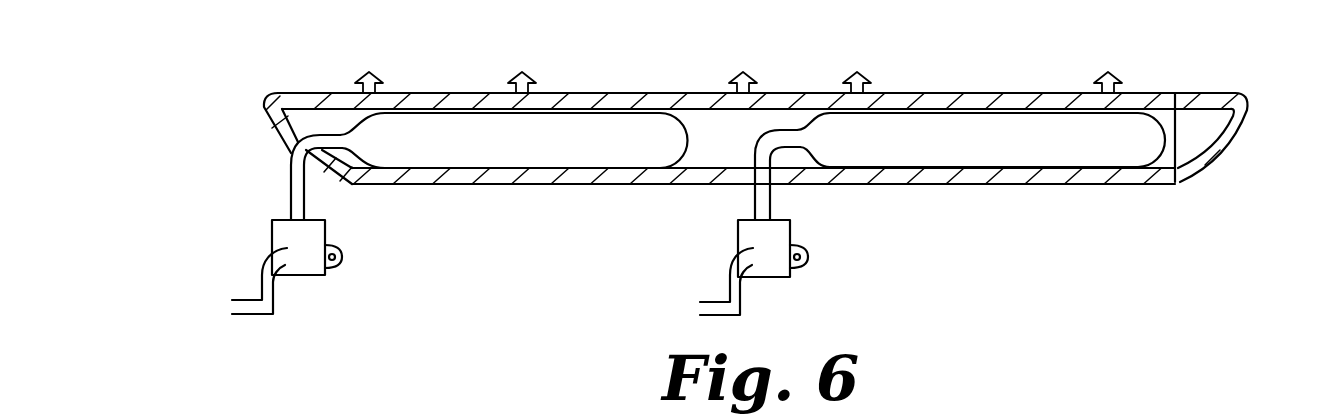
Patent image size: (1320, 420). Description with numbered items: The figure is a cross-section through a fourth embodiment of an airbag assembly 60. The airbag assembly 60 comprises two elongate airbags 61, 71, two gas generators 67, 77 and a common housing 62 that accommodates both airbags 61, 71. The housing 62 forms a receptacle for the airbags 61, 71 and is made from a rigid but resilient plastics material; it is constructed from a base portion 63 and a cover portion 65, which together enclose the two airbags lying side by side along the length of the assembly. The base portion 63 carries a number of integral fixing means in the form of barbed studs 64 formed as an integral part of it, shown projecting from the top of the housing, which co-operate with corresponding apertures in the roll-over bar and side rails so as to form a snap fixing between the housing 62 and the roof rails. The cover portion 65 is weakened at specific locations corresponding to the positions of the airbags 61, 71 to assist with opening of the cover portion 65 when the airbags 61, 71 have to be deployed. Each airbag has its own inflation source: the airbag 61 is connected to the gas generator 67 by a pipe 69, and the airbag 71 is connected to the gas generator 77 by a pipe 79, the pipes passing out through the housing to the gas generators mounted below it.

The airbag assembly 60 is at (990, 76).
The elongate airbag 61 is at (513, 150).
The common housing 62 is at (665, 93).
The base portion 63 is at (440, 93).
The barbed studs 64 is at (371, 73).
The cover portion 65 is at (1050, 185).
The gas generator 67 is at (305, 262).
The pipe 69 is at (290, 188).
The elongate airbag 71 is at (996, 150).
The gas generator 77 is at (768, 265).
The pipe 79 is at (755, 200).